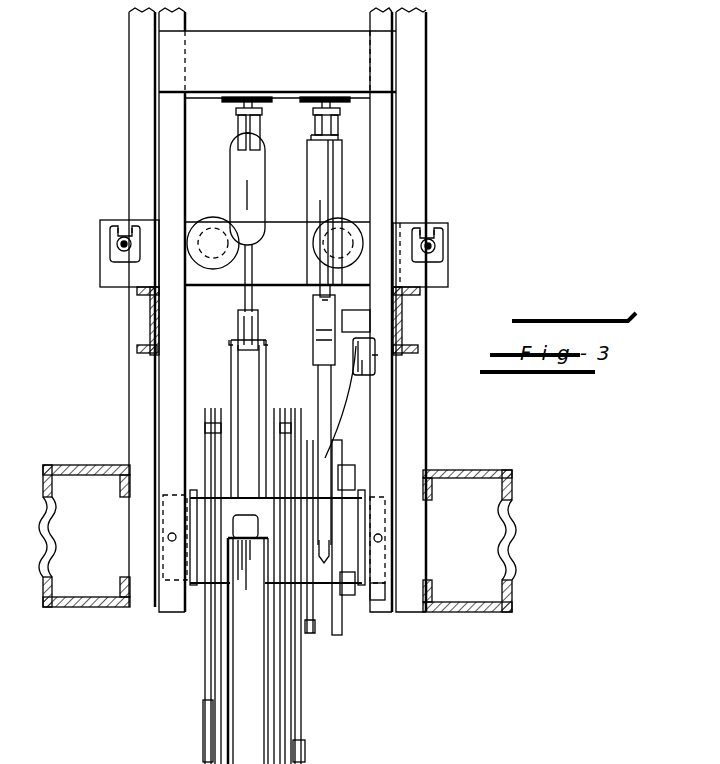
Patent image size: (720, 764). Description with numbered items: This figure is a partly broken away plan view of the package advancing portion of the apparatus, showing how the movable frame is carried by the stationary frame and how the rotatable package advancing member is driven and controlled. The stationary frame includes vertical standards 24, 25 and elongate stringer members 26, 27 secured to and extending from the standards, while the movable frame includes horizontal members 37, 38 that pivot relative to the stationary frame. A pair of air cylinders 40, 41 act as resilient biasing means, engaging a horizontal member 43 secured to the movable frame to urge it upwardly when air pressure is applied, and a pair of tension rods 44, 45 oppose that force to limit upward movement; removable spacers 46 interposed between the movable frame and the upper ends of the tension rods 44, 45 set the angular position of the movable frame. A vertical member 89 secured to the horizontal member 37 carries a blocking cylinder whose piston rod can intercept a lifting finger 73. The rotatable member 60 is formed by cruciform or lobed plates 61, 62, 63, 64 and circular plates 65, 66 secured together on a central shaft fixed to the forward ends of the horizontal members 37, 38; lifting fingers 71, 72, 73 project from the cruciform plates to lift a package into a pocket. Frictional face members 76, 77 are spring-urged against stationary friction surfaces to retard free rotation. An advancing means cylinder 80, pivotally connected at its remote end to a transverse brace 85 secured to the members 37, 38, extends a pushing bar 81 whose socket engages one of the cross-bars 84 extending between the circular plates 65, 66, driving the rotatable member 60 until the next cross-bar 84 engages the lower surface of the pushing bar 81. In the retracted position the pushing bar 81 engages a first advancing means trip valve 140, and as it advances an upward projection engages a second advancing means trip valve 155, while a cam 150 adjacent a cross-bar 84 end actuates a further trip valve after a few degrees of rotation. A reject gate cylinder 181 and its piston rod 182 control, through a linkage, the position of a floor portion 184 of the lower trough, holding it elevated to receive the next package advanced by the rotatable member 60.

The vertical standard 24 is at (46, 536).
The vertical standard 25 is at (508, 538).
The stringer member 26 is at (130, 160).
The stringer member 27 is at (414, 148).
The horizontal member 37 is at (160, 115).
The horizontal member 38 is at (380, 113).
The air cylinder 40 is at (213, 219).
The air cylinder 41 is at (339, 215).
The horizontal member 43 is at (293, 272).
The tension rod 44 is at (110, 245).
The tension rod 45 is at (443, 248).
The removable spacer 46 is at (115, 226).
The rotatable member 60 is at (200, 627).
The plate 61 is at (205, 665).
The plate 62 is at (205, 688).
The plate 63 is at (300, 665).
The plate 64 is at (298, 688).
The circular plate 65 is at (312, 640).
The circular plate 66 is at (342, 622).
The lifting finger 71 is at (205, 721).
The lifting finger 72 is at (295, 722).
The lifting finger 73 is at (302, 742).
The frictional face member 76 is at (195, 555).
The frictional face member 77 is at (362, 555).
The advancing means cylinder 80 is at (307, 165).
The pushing bar 81 is at (318, 385).
The cross-bar 84 is at (342, 465).
The transverse brace 85 is at (298, 66).
The vertical member 89 is at (150, 315).
The first advancing means trip valve 140 is at (312, 344).
The cam 150 is at (348, 474).
The second advancing means trip valve 155 is at (368, 362).
The reject gate cylinder 181 is at (235, 165).
The reject gate cylinder piston rod 182 is at (247, 300).
The floor portion 184 is at (262, 738).